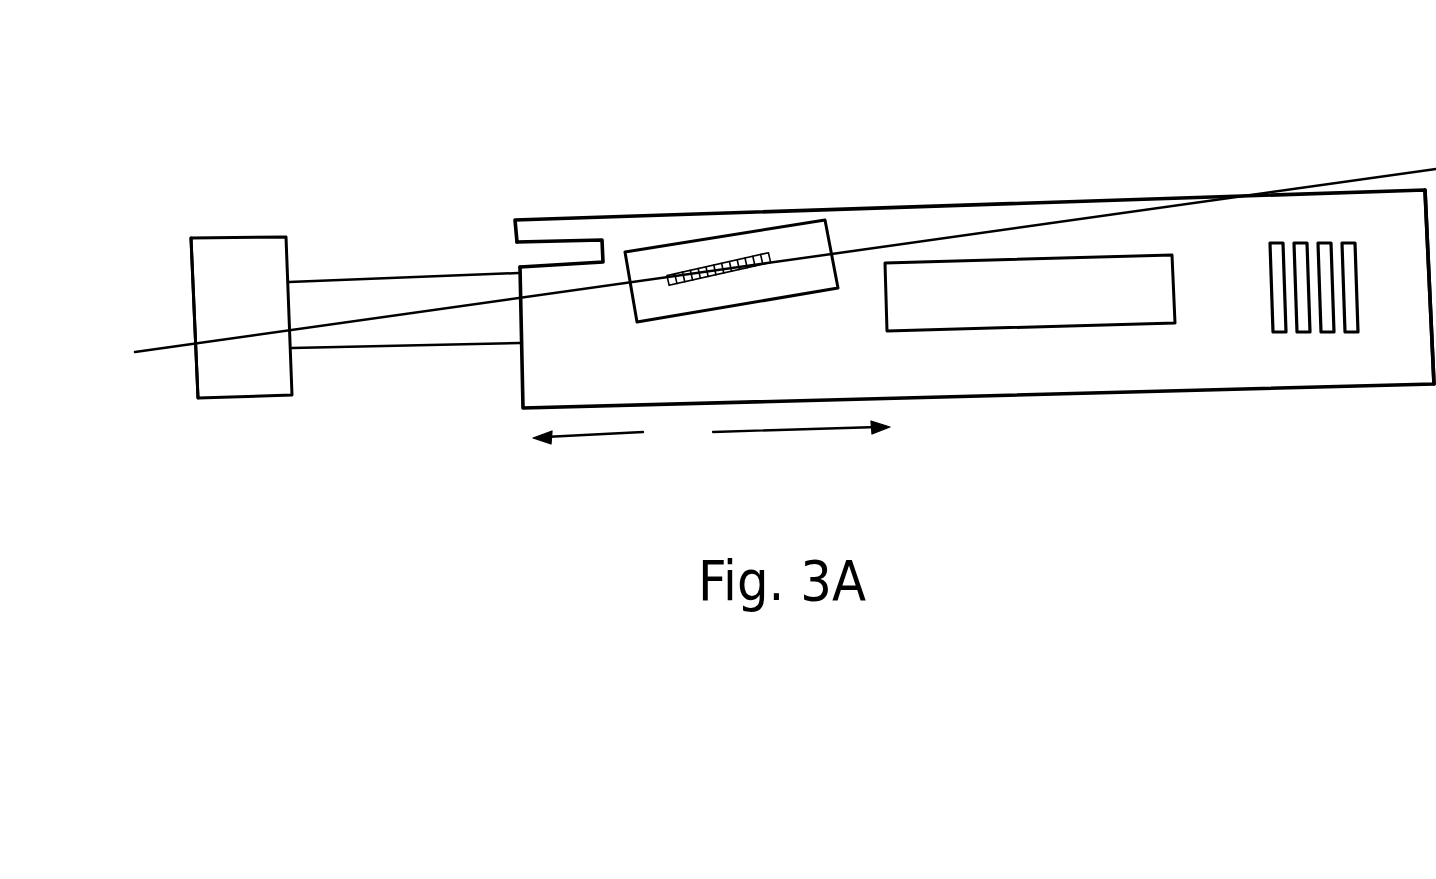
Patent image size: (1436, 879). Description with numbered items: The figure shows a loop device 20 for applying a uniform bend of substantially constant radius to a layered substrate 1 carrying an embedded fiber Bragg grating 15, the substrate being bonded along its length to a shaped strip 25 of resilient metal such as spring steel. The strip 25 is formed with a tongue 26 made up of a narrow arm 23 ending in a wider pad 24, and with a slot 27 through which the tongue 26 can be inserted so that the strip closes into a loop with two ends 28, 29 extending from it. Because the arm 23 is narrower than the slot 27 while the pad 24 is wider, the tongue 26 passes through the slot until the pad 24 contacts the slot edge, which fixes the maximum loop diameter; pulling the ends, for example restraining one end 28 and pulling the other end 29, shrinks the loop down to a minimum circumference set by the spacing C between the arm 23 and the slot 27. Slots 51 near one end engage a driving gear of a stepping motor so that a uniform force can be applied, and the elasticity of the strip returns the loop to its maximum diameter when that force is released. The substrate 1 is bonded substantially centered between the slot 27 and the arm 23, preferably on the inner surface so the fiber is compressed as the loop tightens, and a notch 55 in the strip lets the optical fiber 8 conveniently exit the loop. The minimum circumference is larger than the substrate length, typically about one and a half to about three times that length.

The grating carrier substrate 1 is at (647, 273).
The optical fiber 8 is at (403, 315).
The fiber Bragg grating 15 is at (727, 260).
The loop device 20 is at (1005, 151).
The arm 23 is at (345, 310).
The pad 24 is at (242, 287).
The shaped strip 25 is at (808, 367).
The tongue 26 is at (152, 145).
The slot 27 is at (1062, 292).
The end 28 is at (200, 370).
The end 29 is at (1420, 358).
The slots 51 is at (1372, 333).
The notch 55 is at (520, 252).